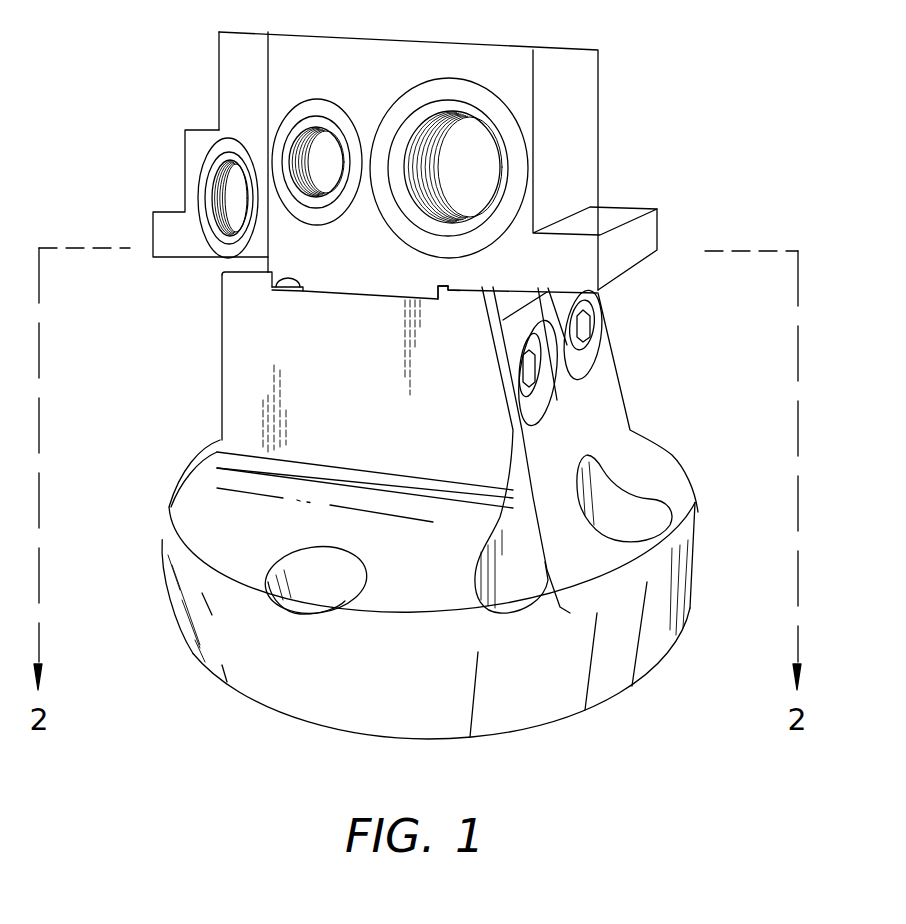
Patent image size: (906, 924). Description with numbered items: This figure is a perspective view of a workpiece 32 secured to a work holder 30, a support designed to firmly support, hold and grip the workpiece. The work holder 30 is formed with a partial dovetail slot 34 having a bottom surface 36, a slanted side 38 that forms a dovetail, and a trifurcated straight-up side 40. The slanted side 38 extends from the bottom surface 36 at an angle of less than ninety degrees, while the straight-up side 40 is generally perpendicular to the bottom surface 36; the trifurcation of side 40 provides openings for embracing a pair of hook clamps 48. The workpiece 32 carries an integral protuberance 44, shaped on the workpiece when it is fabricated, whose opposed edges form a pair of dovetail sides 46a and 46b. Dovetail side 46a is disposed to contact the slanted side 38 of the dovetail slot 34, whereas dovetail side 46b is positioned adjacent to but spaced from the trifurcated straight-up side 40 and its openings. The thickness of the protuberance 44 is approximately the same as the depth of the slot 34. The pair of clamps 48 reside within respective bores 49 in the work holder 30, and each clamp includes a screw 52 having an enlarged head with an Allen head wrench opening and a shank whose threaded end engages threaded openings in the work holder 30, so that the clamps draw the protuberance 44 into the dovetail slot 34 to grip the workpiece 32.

The work holder 30 is at (262, 672).
The workpiece 32 is at (178, 149).
The partial dovetail slot 34 is at (320, 289).
The bottom surface 36 is at (273, 285).
The slanted side 38 is at (273, 280).
The trifurcated straight-up side 40 is at (448, 299).
The protuberance 44 is at (343, 300).
The dovetail side 46a is at (300, 288).
The dovetail side 46b is at (438, 298).
The hook clamp 48 is at (600, 297).
The bore 49 is at (543, 397).
The screw 52 is at (530, 367).